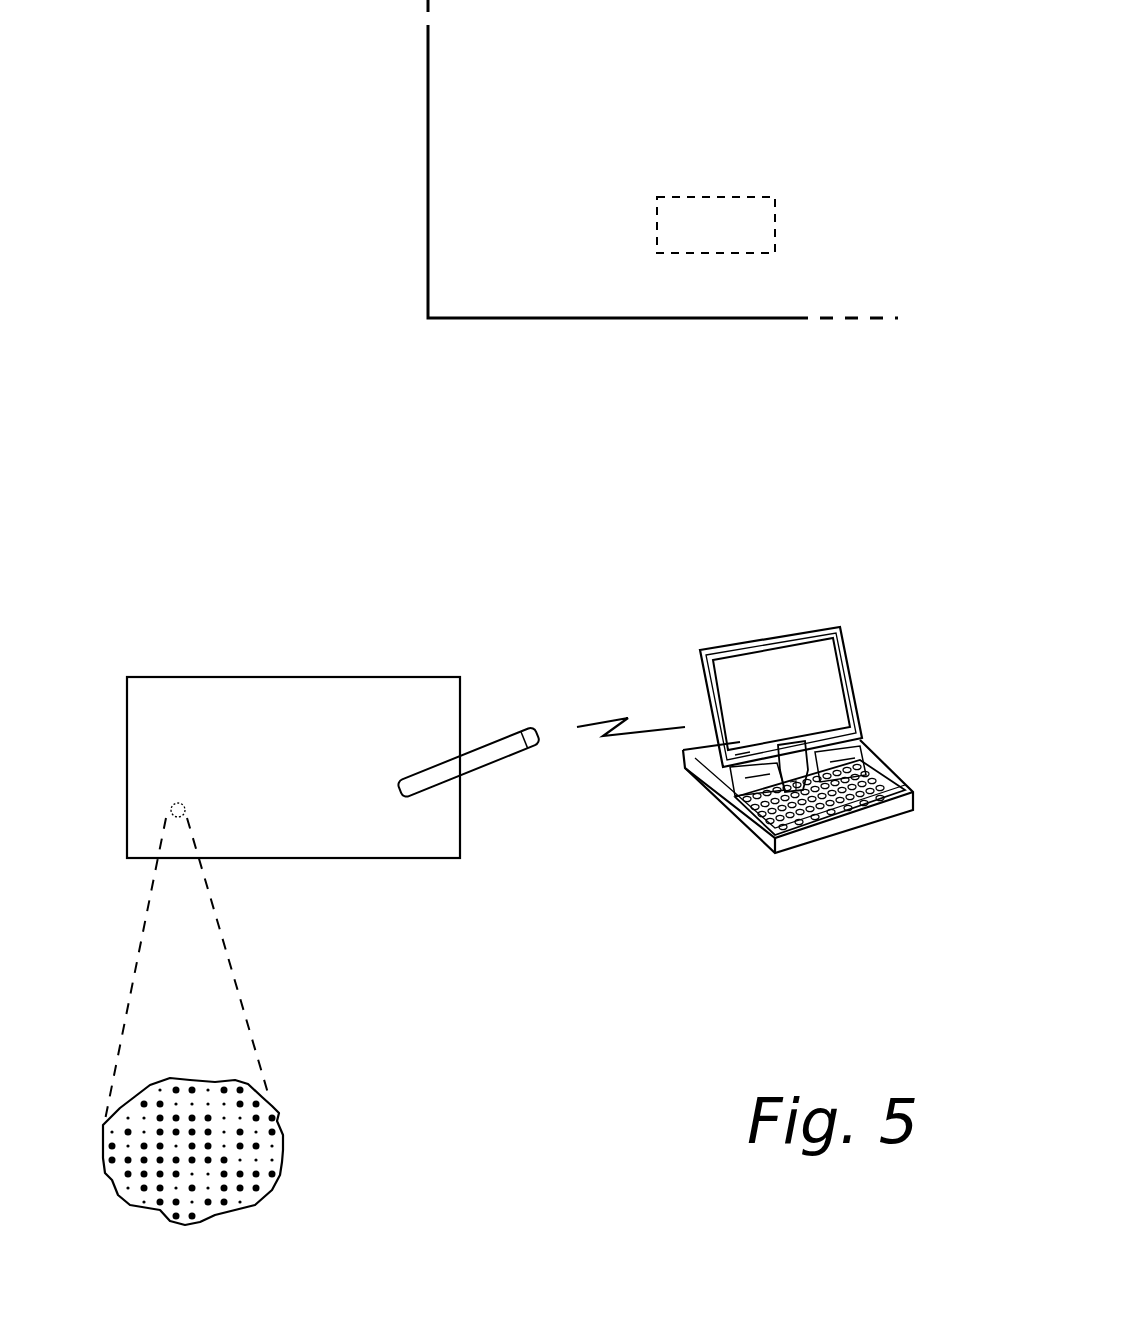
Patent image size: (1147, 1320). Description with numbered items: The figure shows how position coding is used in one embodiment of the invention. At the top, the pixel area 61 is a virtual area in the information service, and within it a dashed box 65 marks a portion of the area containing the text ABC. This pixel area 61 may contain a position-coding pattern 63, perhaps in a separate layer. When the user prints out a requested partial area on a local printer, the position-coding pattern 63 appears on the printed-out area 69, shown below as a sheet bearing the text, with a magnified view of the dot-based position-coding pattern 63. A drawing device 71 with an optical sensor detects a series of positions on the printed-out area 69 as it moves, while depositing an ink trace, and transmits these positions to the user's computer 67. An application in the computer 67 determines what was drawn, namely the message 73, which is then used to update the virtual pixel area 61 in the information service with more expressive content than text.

The pixel area 61 is at (428, 165).
The position-coding pattern 63 is at (282, 1152).
The dashed text box ABC 65 is at (728, 253).
The user's computer 67 is at (858, 694).
The printed-out area 69 is at (460, 686).
The drawing device 71 is at (480, 773).
The message 73 is at (330, 807).